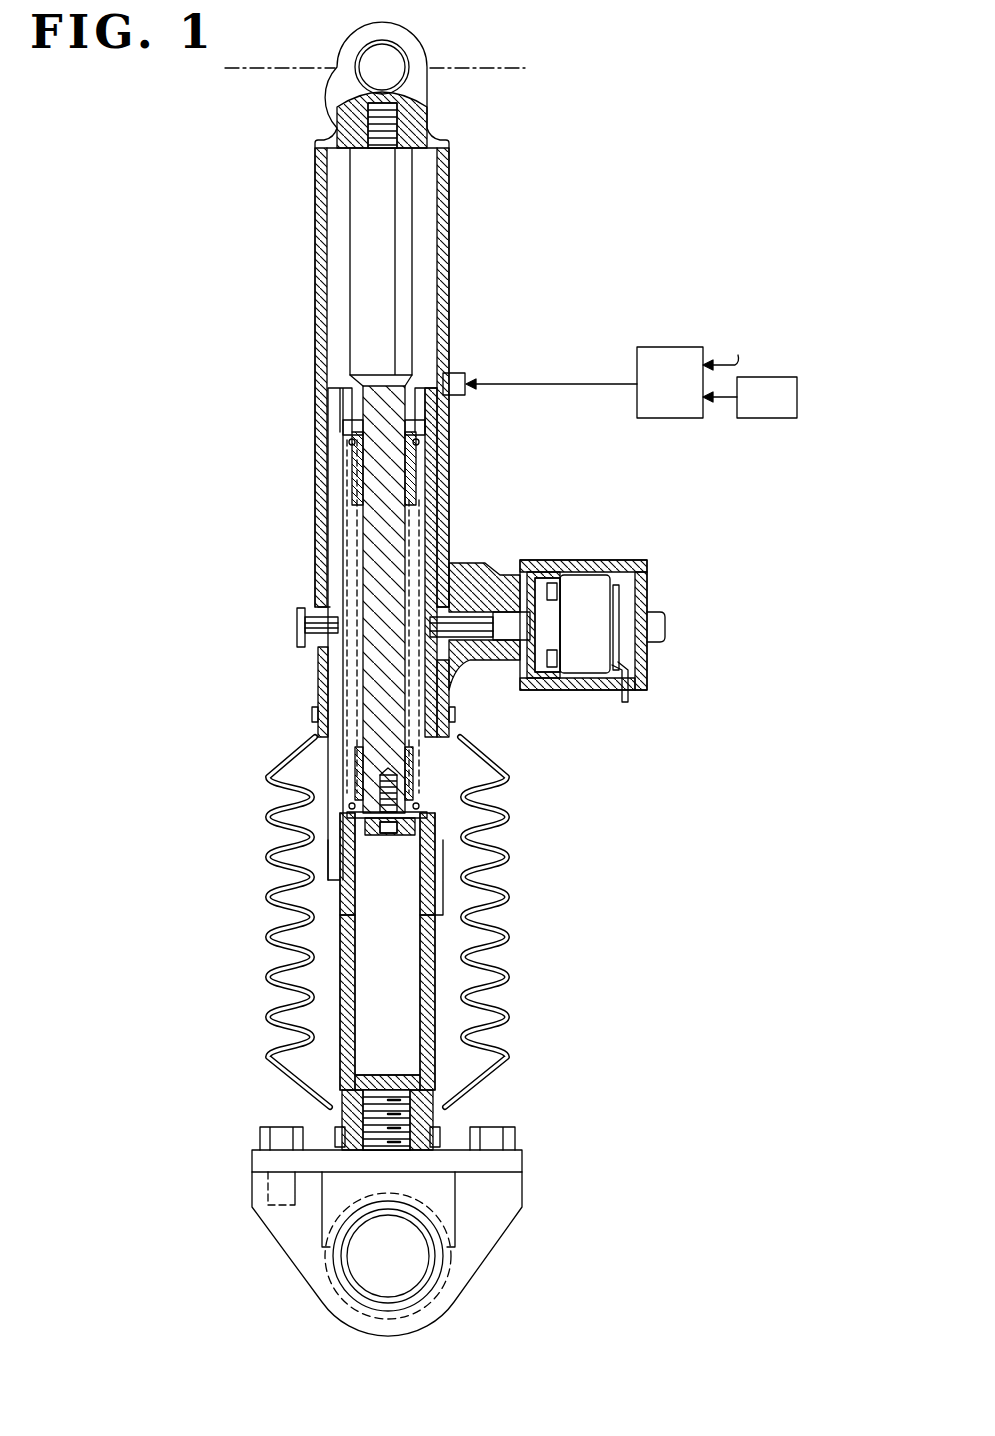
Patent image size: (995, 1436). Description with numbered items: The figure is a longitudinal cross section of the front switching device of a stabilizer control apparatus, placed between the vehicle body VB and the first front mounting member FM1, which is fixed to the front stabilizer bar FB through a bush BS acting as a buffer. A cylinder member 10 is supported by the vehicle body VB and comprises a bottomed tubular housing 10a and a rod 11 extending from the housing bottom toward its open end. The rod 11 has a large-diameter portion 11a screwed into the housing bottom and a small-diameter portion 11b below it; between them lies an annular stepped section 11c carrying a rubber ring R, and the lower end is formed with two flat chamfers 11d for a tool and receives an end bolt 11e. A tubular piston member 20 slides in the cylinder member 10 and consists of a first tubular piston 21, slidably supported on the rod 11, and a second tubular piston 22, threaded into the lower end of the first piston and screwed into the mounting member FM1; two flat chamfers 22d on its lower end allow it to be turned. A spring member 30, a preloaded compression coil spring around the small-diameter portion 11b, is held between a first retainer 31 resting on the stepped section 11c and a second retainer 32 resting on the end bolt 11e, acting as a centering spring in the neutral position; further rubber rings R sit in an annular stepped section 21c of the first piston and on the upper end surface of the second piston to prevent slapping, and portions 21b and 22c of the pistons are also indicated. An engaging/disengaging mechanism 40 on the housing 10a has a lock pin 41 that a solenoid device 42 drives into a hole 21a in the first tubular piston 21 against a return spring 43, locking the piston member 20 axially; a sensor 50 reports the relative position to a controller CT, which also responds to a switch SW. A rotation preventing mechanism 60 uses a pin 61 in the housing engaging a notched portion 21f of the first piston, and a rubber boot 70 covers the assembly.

The vehicle body VB is at (402, 71).
The cylinder member 10 is at (452, 172).
The housing 10a is at (318, 200).
The rod 11 is at (418, 225).
The large-diameter portion 11a is at (378, 268).
The small-diameter portion 11b is at (417, 470).
The annular stepped section 11c is at (348, 440).
The flat chamfers 11d is at (420, 765).
The end bolt 11e is at (368, 832).
The rubber ring R is at (350, 435).
The tubular piston member 20 is at (423, 386).
The first tubular piston 21 is at (445, 520).
The hole 21a is at (478, 605).
The cylinder lower bore 21b is at (335, 677).
The annular stepped section 21c is at (440, 452).
The notched portion 21f is at (333, 565).
The second tubular piston 22 is at (432, 950).
The inner tube end plate 22c is at (420, 814).
The flat chamfers 22d is at (435, 1062).
The spring member 30 is at (352, 535).
The first retainer 31 is at (356, 475).
The second retainer 32 is at (358, 755).
The engaging/disengaging mechanism 40 is at (616, 643).
The lock pin 41 is at (470, 628).
The solenoid device 42 is at (598, 655).
The return spring 43 is at (532, 568).
The sensor 50 is at (452, 395).
The rotation preventing mechanism 60 is at (297, 612).
The pin 61 is at (320, 625).
The rubber boot 70 is at (265, 944).
The controller CT is at (688, 382).
The switch SW is at (767, 397).
The first front mounting member FM1 is at (430, 1150).
The front stabilizer bar FB is at (410, 1255).
The bush BS is at (412, 1292).